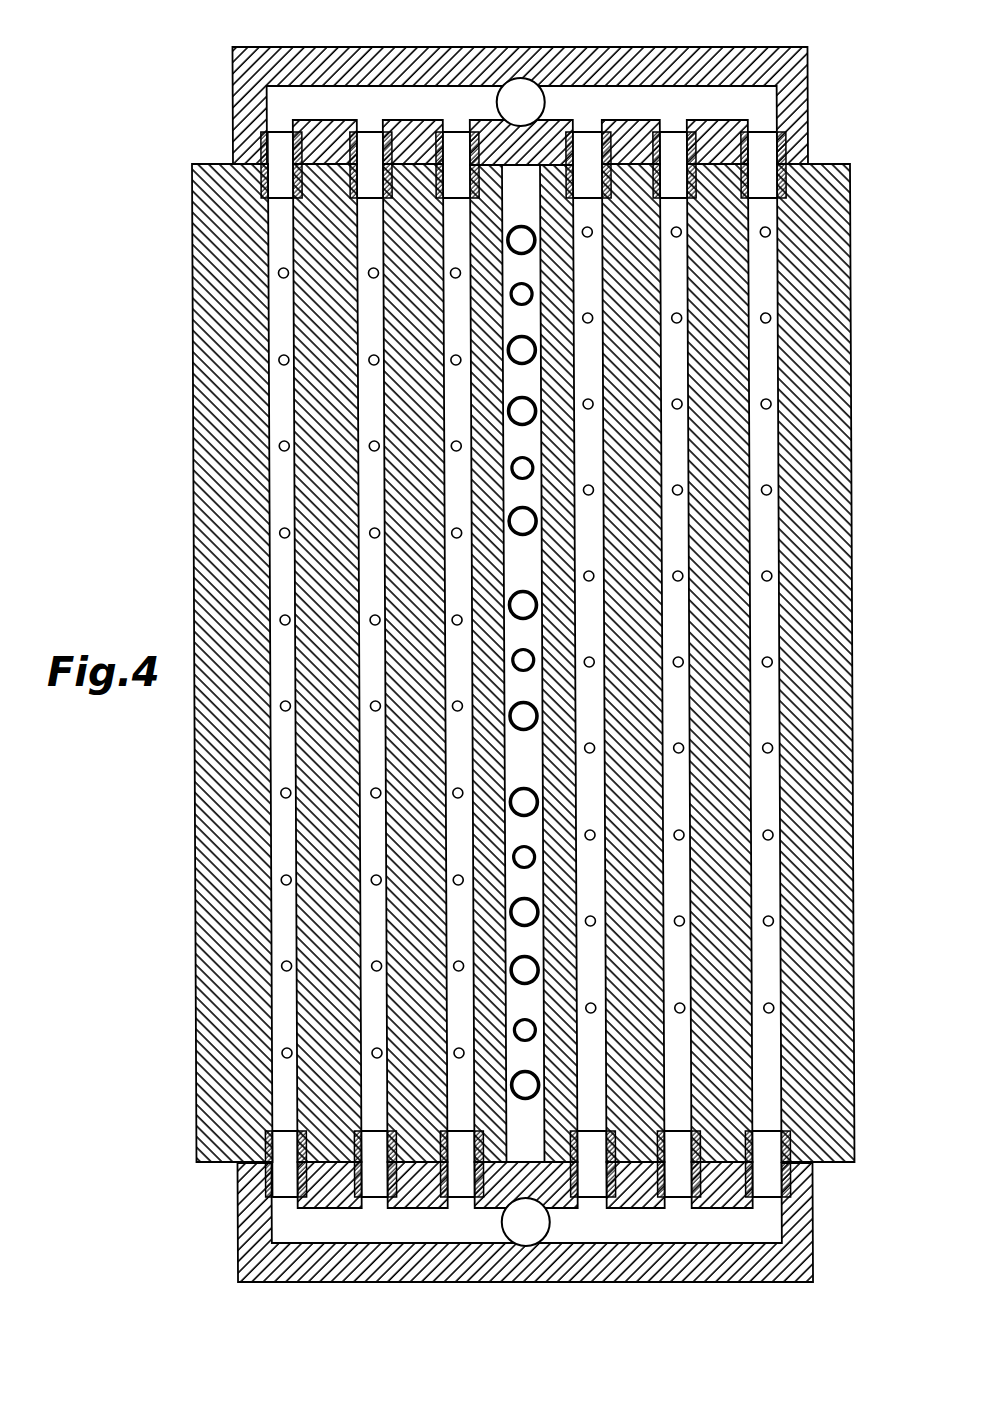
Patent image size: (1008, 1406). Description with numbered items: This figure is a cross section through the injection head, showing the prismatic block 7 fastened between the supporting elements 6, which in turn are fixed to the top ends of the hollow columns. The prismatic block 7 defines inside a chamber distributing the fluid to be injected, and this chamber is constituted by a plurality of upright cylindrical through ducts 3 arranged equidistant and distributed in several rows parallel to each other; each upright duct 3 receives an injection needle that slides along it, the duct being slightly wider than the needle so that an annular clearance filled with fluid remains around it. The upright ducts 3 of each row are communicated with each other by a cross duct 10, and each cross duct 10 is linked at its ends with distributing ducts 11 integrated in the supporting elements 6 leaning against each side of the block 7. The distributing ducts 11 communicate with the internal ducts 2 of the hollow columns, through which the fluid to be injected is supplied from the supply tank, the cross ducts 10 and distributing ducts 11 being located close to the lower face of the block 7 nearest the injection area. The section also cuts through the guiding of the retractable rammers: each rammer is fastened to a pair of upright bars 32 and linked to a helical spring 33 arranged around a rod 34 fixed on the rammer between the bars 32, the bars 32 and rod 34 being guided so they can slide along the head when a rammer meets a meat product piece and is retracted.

The internal duct 2 is at (522, 102).
The upright cylindric through duct 3 is at (766, 746).
The supporting element 6 is at (808, 97).
The prismatic block 7 is at (832, 627).
The cross duct 10 is at (766, 786).
The distributing duct 11 is at (380, 100).
The upright bar 32 is at (518, 413).
The helical spring 33 is at (516, 470).
The rod 34 is at (517, 473).